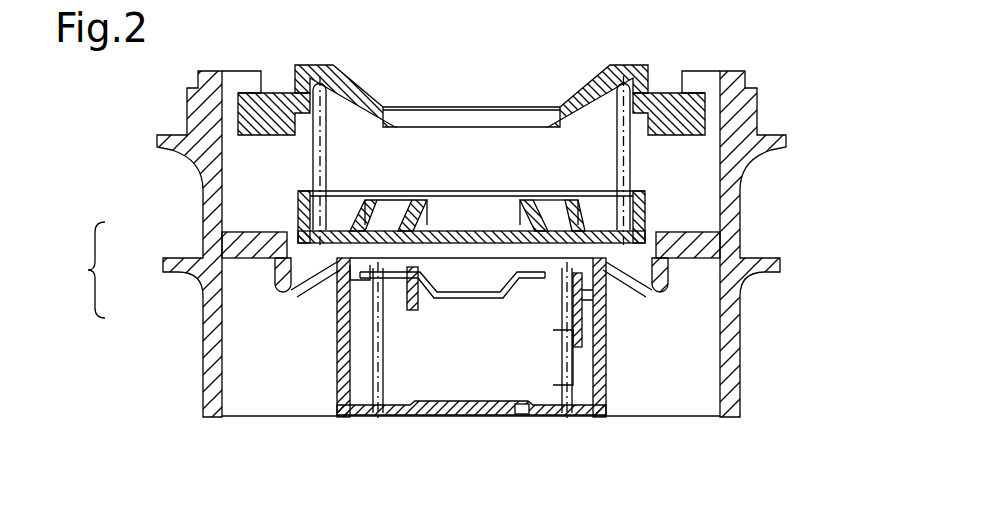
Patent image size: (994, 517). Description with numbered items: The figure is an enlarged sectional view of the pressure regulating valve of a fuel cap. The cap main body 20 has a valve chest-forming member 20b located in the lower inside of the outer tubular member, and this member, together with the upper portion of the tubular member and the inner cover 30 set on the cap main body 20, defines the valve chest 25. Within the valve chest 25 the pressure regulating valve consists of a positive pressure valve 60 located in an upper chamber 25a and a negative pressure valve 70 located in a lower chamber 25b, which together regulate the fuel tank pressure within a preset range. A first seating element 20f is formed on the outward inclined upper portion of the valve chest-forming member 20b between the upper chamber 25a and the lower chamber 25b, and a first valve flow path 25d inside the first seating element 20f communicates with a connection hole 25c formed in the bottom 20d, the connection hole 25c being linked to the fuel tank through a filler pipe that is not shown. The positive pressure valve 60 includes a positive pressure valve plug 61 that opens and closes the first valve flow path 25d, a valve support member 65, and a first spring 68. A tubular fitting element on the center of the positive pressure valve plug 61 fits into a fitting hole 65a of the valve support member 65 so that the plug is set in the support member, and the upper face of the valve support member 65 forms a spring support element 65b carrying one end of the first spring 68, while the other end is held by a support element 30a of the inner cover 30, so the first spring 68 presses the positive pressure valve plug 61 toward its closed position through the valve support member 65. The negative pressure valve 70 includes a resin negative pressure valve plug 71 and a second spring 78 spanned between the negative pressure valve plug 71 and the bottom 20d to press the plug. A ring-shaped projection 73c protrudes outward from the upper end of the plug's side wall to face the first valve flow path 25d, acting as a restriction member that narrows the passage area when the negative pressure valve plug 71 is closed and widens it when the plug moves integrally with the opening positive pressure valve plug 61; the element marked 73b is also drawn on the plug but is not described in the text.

The cap main body 20 is at (745, 212).
The valve chest-forming member 20b is at (610, 383).
The bottom 20d is at (523, 417).
The first seating element 20f is at (618, 264).
The valve chest 25 is at (81, 270).
The upper chamber 25a is at (340, 165).
The lower chamber 25b is at (355, 308).
The connection hole 25c is at (497, 420).
The first valve flow path 25d is at (590, 295).
The inner cover 30 is at (616, 70).
The support element 30a is at (626, 68).
The positive pressure valve 60 is at (385, 191).
The positive pressure valve plug 61 is at (437, 237).
The valve support member 65 is at (557, 237).
The fitting hole 65a is at (523, 237).
The spring support element 65b is at (598, 237).
The first spring 68 is at (592, 128).
The negative pressure valve 70 is at (352, 337).
The negative pressure valve plug 71 is at (416, 296).
The valve seat rod 73b is at (560, 267).
The ring-shaped projection 73c is at (598, 275).
The second spring 78 is at (568, 340).